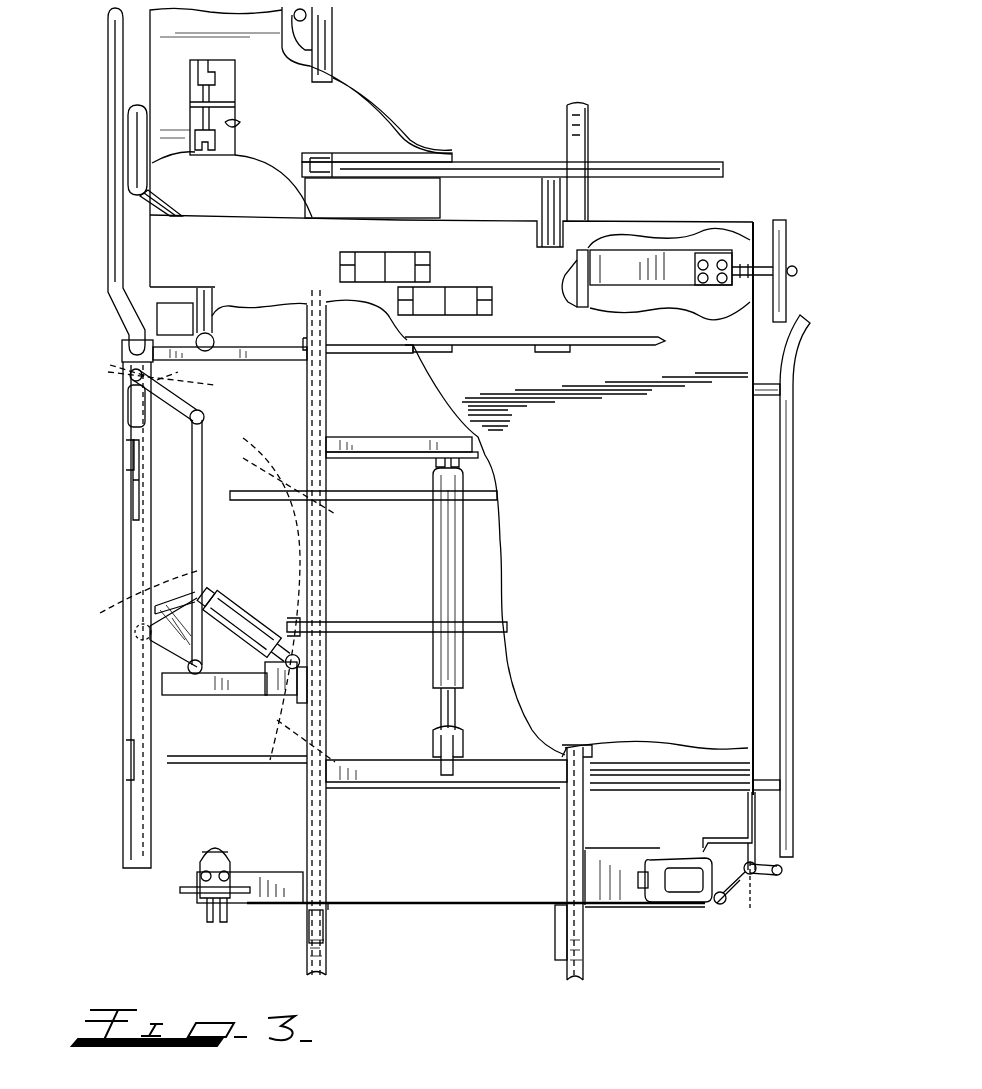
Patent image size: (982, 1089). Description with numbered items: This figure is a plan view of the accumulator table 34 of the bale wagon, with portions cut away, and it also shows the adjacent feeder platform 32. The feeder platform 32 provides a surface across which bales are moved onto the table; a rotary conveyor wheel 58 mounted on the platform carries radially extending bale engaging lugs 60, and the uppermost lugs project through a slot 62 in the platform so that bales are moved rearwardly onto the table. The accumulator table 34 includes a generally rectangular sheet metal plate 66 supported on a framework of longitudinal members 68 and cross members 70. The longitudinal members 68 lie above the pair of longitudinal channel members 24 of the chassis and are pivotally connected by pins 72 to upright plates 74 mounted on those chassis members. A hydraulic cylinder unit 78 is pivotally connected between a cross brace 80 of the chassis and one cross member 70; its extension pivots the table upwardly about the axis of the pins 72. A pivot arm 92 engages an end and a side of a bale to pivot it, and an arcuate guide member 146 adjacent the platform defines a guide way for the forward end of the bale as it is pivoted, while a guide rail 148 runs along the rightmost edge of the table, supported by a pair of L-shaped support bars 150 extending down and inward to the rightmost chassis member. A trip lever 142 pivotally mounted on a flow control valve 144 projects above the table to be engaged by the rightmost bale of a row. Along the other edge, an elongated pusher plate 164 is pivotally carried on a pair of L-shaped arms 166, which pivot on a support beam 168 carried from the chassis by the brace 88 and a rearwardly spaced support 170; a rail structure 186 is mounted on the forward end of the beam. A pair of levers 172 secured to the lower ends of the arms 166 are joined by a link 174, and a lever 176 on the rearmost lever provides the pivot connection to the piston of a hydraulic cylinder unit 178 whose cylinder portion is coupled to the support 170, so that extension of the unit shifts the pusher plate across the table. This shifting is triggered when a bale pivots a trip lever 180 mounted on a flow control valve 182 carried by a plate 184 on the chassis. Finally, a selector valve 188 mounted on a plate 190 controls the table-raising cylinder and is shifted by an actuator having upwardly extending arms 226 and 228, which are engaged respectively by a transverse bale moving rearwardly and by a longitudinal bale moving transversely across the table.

The longitudinal channel member 24 is at (335, 60).
The feeder platform 32 is at (282, 95).
The accumulator table 34 is at (633, 507).
The rotary conveyor wheel 58 is at (220, 92).
The bale engaging lug 60 is at (222, 55).
The slot 62 is at (240, 124).
The sheet metal plate 66 is at (770, 460).
The longitudinal member 68 is at (588, 292).
The cross member 70 is at (366, 362).
The pin 72 is at (324, 914).
The upright plate 74 is at (307, 940).
The hydraulic cylinder unit 78 is at (432, 545).
The cross brace 80 is at (396, 438).
The brace 88 is at (254, 347).
The pivot arm 92 is at (150, 208).
The trip lever 142 is at (783, 222).
The flow control valve 144 is at (690, 282).
The arcuate guide member 146 is at (388, 117).
The guide rail 148 is at (794, 618).
The L-shaped support bar 150 is at (762, 396).
The pusher plate 164 is at (125, 522).
The L-shaped arm 166 is at (124, 450).
The support beam 168 is at (131, 512).
The support 170 is at (192, 696).
The lever 172 is at (200, 388).
The link 174 is at (200, 520).
The lever 176 is at (153, 606).
The hydraulic cylinder unit 178 is at (233, 608).
The trip lever 180 is at (195, 895).
The flow control valve 182 is at (203, 856).
The plate 184 is at (262, 877).
The rail structure 186 is at (108, 55).
The valve 188 is at (688, 856).
The plate 190 is at (628, 852).
The arm 226 is at (780, 874).
The arm 228 is at (724, 903).